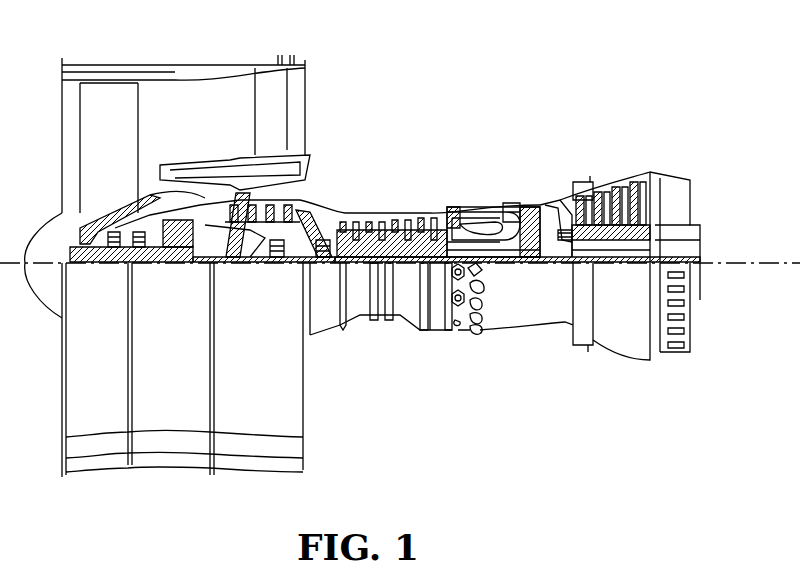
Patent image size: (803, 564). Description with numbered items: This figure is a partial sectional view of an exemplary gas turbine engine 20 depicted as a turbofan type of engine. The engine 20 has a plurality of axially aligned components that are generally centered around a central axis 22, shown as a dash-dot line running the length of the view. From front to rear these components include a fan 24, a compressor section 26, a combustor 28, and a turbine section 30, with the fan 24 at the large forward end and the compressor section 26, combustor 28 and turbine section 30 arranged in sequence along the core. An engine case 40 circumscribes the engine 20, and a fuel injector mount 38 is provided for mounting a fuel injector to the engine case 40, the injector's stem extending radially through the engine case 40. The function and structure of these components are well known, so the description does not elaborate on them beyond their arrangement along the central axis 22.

The gas turbine engine 20 is at (686, 79).
The central axis 22 is at (722, 263).
The fan 24 is at (108, 120).
The compressor section 26 is at (330, 195).
The combustor 28 is at (478, 196).
The turbine section 30 is at (584, 172).
The fuel injector mount 38 is at (472, 332).
The engine case 40 is at (436, 336).